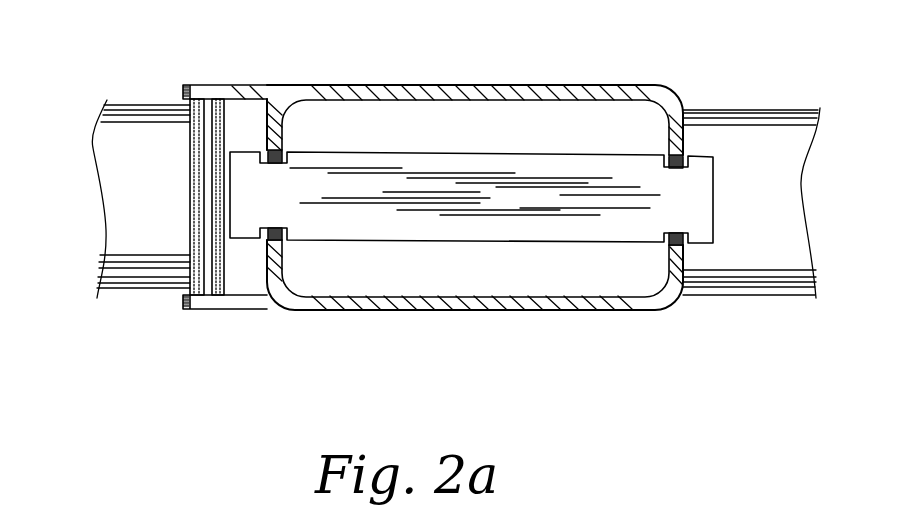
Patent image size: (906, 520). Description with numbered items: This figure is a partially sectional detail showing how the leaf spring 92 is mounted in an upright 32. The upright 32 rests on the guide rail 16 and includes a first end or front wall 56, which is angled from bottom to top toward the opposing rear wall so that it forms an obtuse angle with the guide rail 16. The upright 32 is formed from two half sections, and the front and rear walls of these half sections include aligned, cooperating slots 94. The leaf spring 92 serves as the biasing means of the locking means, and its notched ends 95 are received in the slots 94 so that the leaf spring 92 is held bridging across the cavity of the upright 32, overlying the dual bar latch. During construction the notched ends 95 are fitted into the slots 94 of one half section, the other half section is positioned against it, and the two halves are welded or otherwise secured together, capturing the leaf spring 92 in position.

The guide rail 16 is at (131, 123).
The first upright 32 is at (670, 93).
The first end or front wall 56 is at (247, 135).
The leaf spring 92 is at (537, 213).
The slots 94 is at (266, 160).
The notched ends 95 is at (270, 163).